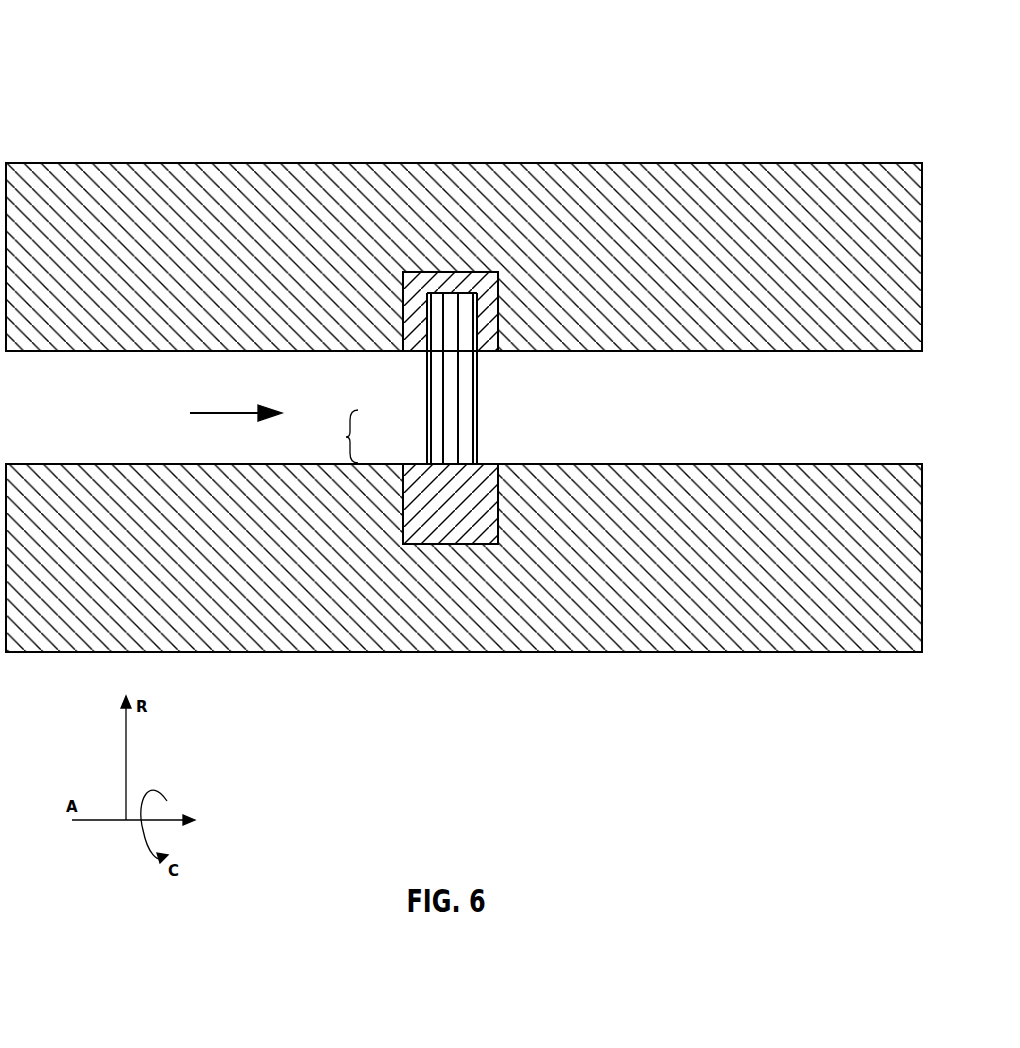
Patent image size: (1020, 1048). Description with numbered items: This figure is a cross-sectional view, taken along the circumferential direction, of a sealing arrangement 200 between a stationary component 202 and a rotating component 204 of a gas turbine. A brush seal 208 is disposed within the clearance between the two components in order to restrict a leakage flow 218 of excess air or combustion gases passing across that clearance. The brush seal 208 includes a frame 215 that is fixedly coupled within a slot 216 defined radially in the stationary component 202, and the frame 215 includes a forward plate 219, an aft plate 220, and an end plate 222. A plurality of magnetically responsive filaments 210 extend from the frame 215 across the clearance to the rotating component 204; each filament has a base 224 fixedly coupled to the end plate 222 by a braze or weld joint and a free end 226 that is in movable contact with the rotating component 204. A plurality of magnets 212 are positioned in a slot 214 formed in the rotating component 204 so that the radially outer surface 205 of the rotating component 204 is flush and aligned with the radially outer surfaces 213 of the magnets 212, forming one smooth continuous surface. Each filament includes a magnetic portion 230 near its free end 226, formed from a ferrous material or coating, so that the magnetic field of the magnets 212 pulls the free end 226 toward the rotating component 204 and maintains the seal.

The sealing arrangement 200 is at (93, 93).
The stationary component 202 is at (808, 195).
The rotating component 204 is at (761, 636).
The radially outer surface 205 is at (782, 464).
The brush seal 208 is at (385, 285).
The magnetically responsive filaments 210 is at (477, 383).
The magnets 212 is at (492, 506).
The radially outer surfaces of the magnets 213 is at (497, 464).
The slot 214 is at (453, 544).
The frame 215 is at (499, 288).
The slot 216 is at (462, 292).
The leakage flow 218 is at (236, 391).
The forward plate 219 is at (403, 317).
The aft plate 220 is at (493, 318).
The end plate 222 is at (485, 278).
The base 224 is at (452, 303).
The free end 226 is at (427, 463).
The magnetic portion 230 is at (333, 436).